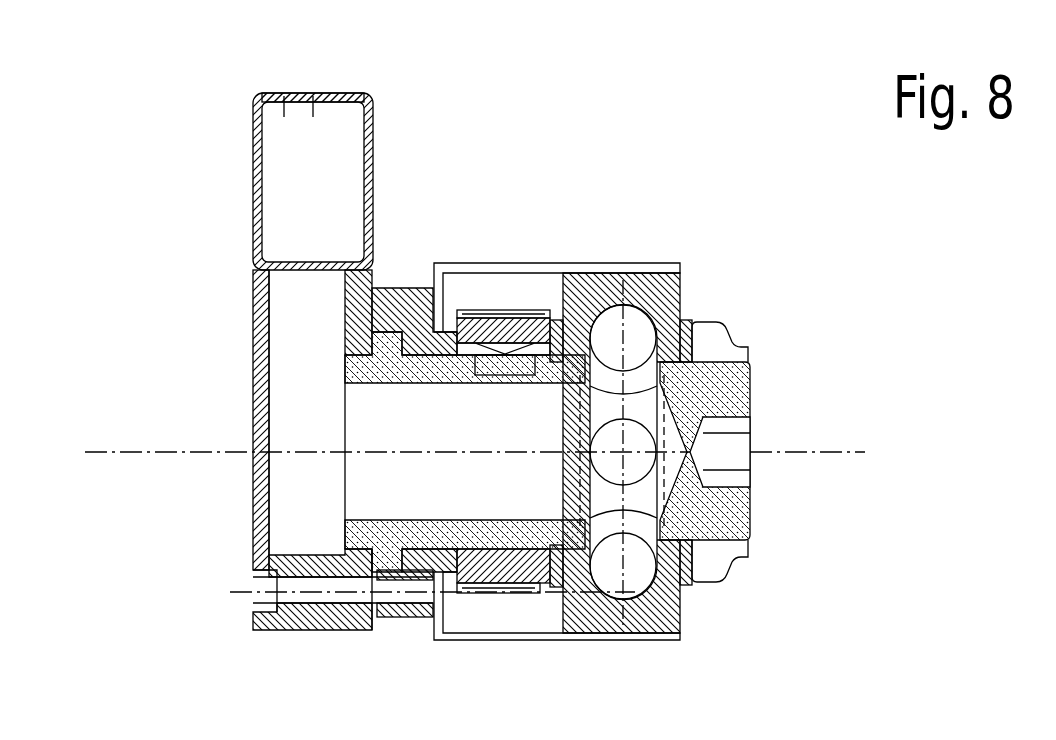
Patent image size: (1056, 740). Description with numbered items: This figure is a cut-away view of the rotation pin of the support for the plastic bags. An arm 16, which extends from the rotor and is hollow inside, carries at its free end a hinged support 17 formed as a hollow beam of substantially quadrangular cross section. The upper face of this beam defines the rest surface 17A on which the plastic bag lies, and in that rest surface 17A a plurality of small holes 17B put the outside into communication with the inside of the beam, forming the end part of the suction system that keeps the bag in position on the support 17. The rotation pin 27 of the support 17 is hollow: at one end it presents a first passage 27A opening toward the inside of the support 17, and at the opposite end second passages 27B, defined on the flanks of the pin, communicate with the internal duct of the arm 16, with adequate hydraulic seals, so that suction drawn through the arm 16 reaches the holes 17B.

The arm 16 is at (553, 265).
The support 17 is at (373, 208).
The rest surface 17A is at (345, 94).
The small holes 17B is at (312, 93).
The rotation pin 27 is at (418, 592).
The first passage 27A is at (345, 430).
The second passages 27B is at (640, 332).